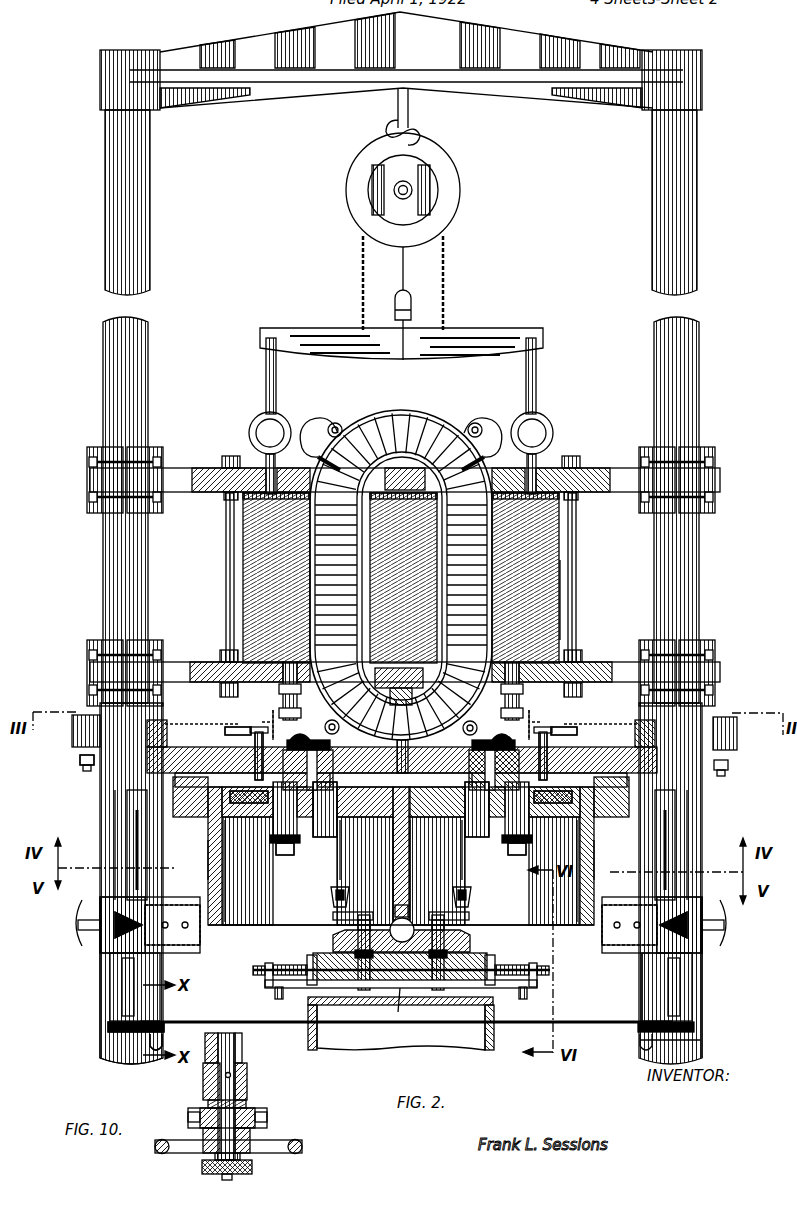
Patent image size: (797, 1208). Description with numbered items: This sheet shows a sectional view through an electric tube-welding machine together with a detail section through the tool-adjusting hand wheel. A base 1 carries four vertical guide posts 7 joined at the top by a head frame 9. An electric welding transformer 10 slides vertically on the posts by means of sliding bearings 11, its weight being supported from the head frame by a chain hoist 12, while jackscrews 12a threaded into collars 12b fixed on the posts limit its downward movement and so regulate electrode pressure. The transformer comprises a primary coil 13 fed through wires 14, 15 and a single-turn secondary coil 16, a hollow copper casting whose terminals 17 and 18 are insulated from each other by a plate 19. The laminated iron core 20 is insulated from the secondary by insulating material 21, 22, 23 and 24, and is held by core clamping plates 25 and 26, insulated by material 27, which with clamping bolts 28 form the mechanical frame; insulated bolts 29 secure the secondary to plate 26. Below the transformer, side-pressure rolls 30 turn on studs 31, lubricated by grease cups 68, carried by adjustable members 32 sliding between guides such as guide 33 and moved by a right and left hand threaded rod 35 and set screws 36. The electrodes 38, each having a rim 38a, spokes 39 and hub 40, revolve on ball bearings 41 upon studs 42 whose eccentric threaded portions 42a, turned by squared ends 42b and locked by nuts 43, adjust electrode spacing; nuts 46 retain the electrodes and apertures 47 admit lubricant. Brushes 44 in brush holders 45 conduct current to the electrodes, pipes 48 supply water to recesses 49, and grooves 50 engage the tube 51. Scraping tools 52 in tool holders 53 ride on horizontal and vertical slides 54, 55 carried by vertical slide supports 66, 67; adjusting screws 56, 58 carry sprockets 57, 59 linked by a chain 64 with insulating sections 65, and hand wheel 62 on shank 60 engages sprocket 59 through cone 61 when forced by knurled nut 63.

In FIG. 2, the base 1 is at (476, 1048).
In FIG. 2, the guide posts 7 is at (103, 343).
In FIG. 2, the head frame 9 is at (262, 40).
In FIG. 2, the electric welding transformer 10 is at (560, 585).
In FIG. 2, the sliding bearings 11 is at (87, 455).
In FIG. 2, the chain hoist 12 is at (462, 186).
In FIG. 2, the jackscrews 12a is at (82, 766).
In FIG. 2, the collars 12b is at (72, 742).
In FIG. 2, the primary coil 13 is at (415, 578).
In FIG. 2, the wire 14 is at (310, 420).
In FIG. 2, the wire 15 is at (496, 420).
In FIG. 2, the secondary coil 16 is at (403, 405).
In FIG. 2, the secondary terminal 17 is at (402, 746).
In FIG. 2, the secondary terminal 18 is at (413, 756).
In FIG. 2, the insulating plate 19 is at (401, 782).
In FIG. 2, the laminated iron core 20 is at (401, 578).
In FIG. 2, the insulating material 21 is at (401, 575).
In FIG. 2, the insulating material 22 is at (436, 414).
In FIG. 2, the insulating material 23 is at (401, 576).
In FIG. 2, the insulating material 24 is at (399, 700).
In FIG. 2, the core clamping plate 25 is at (205, 492).
In FIG. 2, the core clamping plate 26 is at (182, 662).
In FIG. 2, the insulating material 27 is at (232, 456).
In FIG. 2, the clamping bolts 28 is at (226, 557).
In FIG. 2, the insulated bolts 29 is at (280, 690).
In FIG. 2, the side-pressure rolls 30 is at (333, 916).
In FIG. 2, the studs 31 is at (333, 937).
In FIG. 2, the adjustable members 32 is at (313, 956).
In FIG. 2, the guide 33 is at (399, 1012).
In FIG. 2, the right and left hand threaded rod 35 is at (532, 963).
In FIG. 2, the set screws 36 is at (253, 972).
In FIG. 2, the electrodes 38 is at (208, 857).
In FIG. 2, the rim 38a is at (207, 815).
In FIG. 2, the web or spokes 39 is at (401, 871).
In FIG. 2, the hub 40 is at (403, 850).
In FIG. 2, the ball bearings 41 is at (338, 786).
In FIG. 2, the studs or trunnions 42 is at (338, 830).
In FIG. 2, the eccentric stud portion 42a is at (402, 723).
In FIG. 2, the squared end 42b is at (273, 716).
In FIG. 2, the nuts 43 is at (255, 744).
In FIG. 2, the brushes 44 is at (612, 817).
In FIG. 2, the brush holders 45 is at (127, 797).
In FIG. 2, the threaded nuts 46 is at (287, 856).
In FIG. 2, the apertures 47 is at (400, 771).
In FIG. 2, the pipes 48 is at (225, 728).
In FIG. 2, the recesses 49 is at (401, 797).
In FIG. 2, the groove 50 is at (393, 884).
In FIG. 2, the tube 51 is at (418, 903).
In FIG. 2, the scraping tools 52 is at (200, 940).
In FIG. 2, the tool holders 53 is at (186, 950).
In FIG. 2, the horizontal tool feeding slide 54 is at (170, 900).
In FIG. 2, the vertical tool feeding slide 55 is at (100, 968).
In FIG. 2, the vertical adjusting screw 56 is at (665, 980).
In FIG. 2, the sprocket 57 is at (680, 1030).
In FIG. 2, the vertical adjusting screw 58 is at (122, 985).
In FIG. 10, the vertical adjusting screw 58 is at (240, 1060).
In FIG. 2, the sprocket 59 is at (108, 1024).
In FIG. 10, the sprocket 59 is at (255, 1110).
In FIG. 10, the shank 60 is at (203, 1135).
In FIG. 10, the cone 61 is at (267, 1120).
In FIG. 2, the hand wheel 62 is at (148, 1040).
In FIG. 10, the hand wheel 62 is at (303, 1148).
In FIG. 2, the knurled nut 63 is at (120, 1062).
In FIG. 10, the knurled nut 63 is at (202, 1170).
In FIG. 2, the sprocket chain 64 is at (510, 1025).
In FIG. 10, the sprocket chain 64 is at (194, 1112).
In FIG. 2, the insulating sections 65 is at (218, 1020).
In FIG. 2, the vertical slide support 66 is at (690, 832).
In FIG. 2, the vertical slide support 67 is at (115, 822).
In FIG. 10, the vertical slide support 67 is at (208, 1045).
In FIG. 2, the grease cups 68 is at (331, 892).